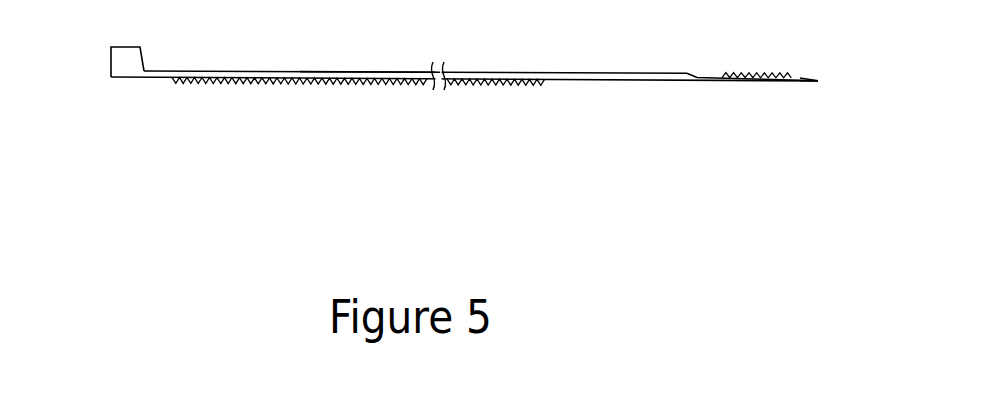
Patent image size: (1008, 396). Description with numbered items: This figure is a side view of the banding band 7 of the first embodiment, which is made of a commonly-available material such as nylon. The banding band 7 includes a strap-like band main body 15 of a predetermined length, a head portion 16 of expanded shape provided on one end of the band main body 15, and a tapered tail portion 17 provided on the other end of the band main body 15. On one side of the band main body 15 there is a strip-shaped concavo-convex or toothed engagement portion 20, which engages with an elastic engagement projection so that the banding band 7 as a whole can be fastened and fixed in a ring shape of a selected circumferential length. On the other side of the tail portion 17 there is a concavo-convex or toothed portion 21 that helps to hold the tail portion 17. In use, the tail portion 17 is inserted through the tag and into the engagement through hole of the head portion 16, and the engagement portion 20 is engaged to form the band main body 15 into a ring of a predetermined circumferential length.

The banding band 7 is at (554, 70).
The band main body 15 is at (374, 72).
The head portion 16 is at (111, 62).
The tail portion 17 is at (818, 80).
The engagement portion 20 is at (325, 90).
The toothed portion 21 is at (764, 63).